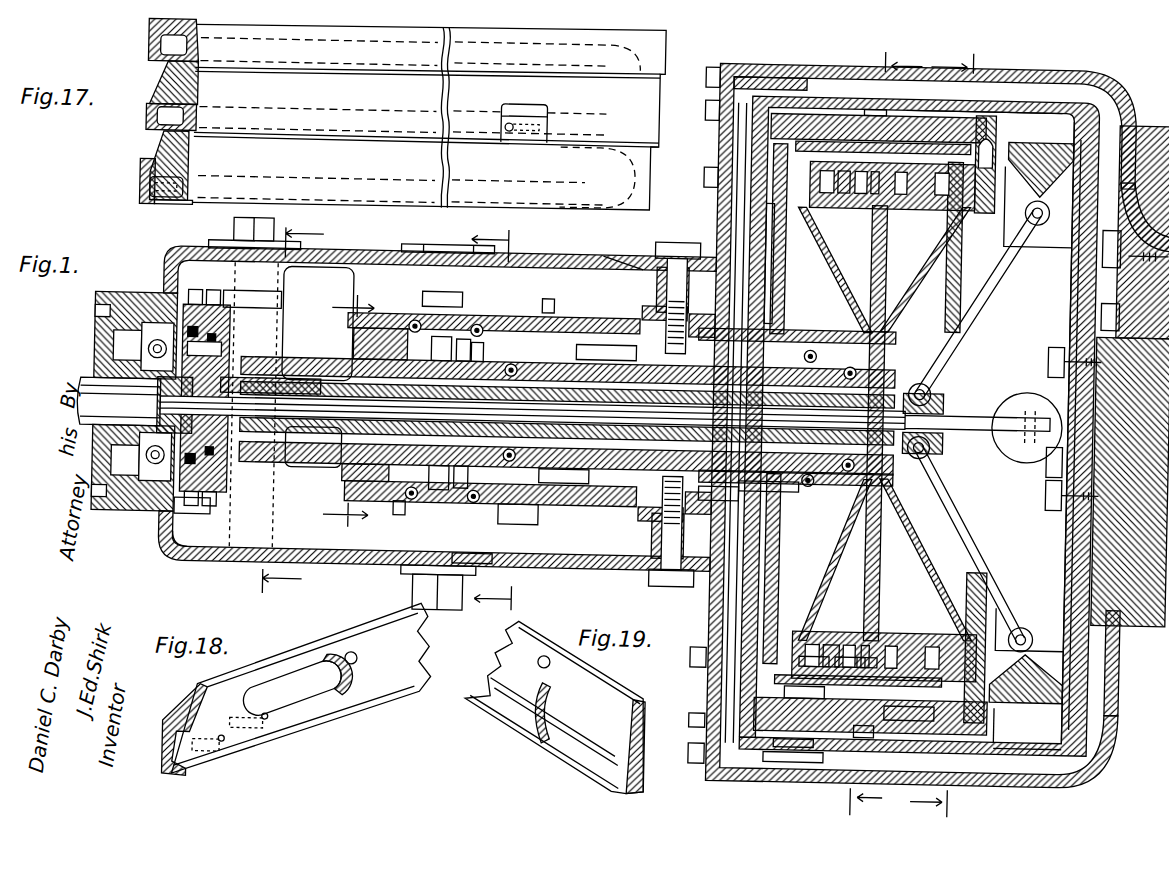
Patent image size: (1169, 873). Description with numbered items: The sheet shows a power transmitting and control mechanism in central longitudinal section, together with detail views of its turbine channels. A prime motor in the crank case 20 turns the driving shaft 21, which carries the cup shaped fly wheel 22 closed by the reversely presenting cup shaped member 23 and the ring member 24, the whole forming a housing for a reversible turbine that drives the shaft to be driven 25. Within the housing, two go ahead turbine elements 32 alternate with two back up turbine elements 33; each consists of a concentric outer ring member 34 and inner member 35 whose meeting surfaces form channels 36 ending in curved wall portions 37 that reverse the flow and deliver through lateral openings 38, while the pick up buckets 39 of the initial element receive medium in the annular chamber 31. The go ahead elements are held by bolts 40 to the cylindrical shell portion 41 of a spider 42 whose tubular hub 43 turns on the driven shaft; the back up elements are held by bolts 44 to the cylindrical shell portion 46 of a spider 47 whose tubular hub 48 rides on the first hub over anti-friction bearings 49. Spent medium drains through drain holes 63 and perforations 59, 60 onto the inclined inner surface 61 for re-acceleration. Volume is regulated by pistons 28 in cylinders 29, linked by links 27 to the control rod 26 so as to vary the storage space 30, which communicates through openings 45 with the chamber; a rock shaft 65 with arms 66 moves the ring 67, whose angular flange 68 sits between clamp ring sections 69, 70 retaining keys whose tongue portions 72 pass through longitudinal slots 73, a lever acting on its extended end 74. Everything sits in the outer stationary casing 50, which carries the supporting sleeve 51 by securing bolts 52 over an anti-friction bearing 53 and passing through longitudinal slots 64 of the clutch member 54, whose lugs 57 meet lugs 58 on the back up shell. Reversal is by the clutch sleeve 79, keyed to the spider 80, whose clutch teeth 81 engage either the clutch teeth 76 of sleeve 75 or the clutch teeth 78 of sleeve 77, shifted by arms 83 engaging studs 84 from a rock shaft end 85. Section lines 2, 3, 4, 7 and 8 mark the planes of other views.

In FIG. 1, the crank case 20 is at (1144, 209).
In FIG. 1, the driving shaft 21 is at (1106, 375).
In FIG. 1, the fly wheel 22 is at (1076, 122).
In FIG. 1, the cup shaped member 23 is at (908, 104).
In FIG. 1, the ring member 24 is at (1012, 78).
In FIG. 1, the shaft to be driven 25 is at (92, 389).
In FIG. 1, the control rod 26 is at (718, 492).
In FIG. 1, the links 27 is at (990, 292).
In FIG. 1, the pistons 28 is at (1070, 150).
In FIG. 1, the cylinders 29 is at (1030, 384).
In FIG. 1, the storage space 30 is at (1048, 734).
In FIG. 1, the annular chamber 31 is at (1007, 725).
In FIG. 17, the go ahead turbine elements 32 is at (143, 36).
In FIG. 1, the go ahead turbine elements 32 is at (864, 203).
In FIG. 17, the back up turbine elements 33 is at (165, 90).
In FIG. 1, the back up turbine elements 33 is at (840, 203).
In FIG. 17, the outer ring member 34 is at (140, 182).
In FIG. 1, the outer ring member 34 is at (852, 642).
In FIG. 18, the outer ring member 34 is at (362, 650).
In FIG. 19, the outer ring member 34 is at (626, 692).
In FIG. 17, the inner member 35 is at (180, 160).
In FIG. 1, the inner member 35 is at (820, 640).
In FIG. 17, the channels 36 is at (158, 52).
In FIG. 1, the channels 36 is at (876, 650).
In FIG. 18, the channels 36 is at (286, 710).
In FIG. 19, the channels 36 is at (496, 688).
In FIG. 17, the curved wall portions 37 is at (337, 85).
In FIG. 18, the curved wall portions 37 is at (345, 655).
In FIG. 19, the curved wall portions 37 is at (540, 728).
In FIG. 17, the lateral openings 38 is at (168, 214).
In FIG. 1, the lateral openings 38 is at (924, 230).
In FIG. 1, the pick up buckets 39 is at (1000, 134).
In FIG. 1, the bolts 40 is at (920, 210).
In FIG. 1, the cylindrical shell portion 41 is at (838, 203).
In FIG. 1, the spider 42 is at (898, 290).
In FIG. 1, the tubular hub 43 is at (797, 410).
In FIG. 1, the bolts 44 is at (832, 112).
In FIG. 1, the openings 45 is at (1008, 74).
In FIG. 1, the cylindrical shell portion 46 is at (812, 794).
In FIG. 1, the spider 47 is at (831, 293).
In FIG. 1, the tubular hub 48 is at (797, 346).
In FIG. 1, the anti-friction bearings 49 is at (906, 476).
In FIG. 1, the outer stationary casing 50 is at (612, 262).
In FIG. 1, the supporting sleeve 51 is at (687, 420).
In FIG. 1, the securing bolts 52 is at (674, 256).
In FIG. 1, the anti-friction bearing 53 is at (585, 316).
In FIG. 1, the clutch member 54 is at (914, 716).
In FIG. 1, the lugs 57 is at (732, 684).
In FIG. 1, the lugs 58 is at (808, 100).
In FIG. 1, the perforations 59 is at (812, 744).
In FIG. 1, the perforations 60 is at (790, 760).
In FIG. 1, the inner surface 61 is at (874, 734).
In FIG. 17, the drain holes 63 is at (186, 191).
In FIG. 18, the drain holes 63 is at (272, 728).
In FIG. 1, the longitudinal slots 64 is at (645, 312).
In FIG. 1, the rock shaft 65 is at (198, 566).
In FIG. 1, the arms 66 is at (262, 293).
In FIG. 1, the ring 67 is at (230, 322).
In FIG. 1, the angular flange 68 is at (230, 344).
In FIG. 1, the clamp ring section 69 is at (230, 364).
In FIG. 1, the clamp ring section 70 is at (163, 266).
In FIG. 1, the tongue portion 72 is at (270, 420).
In FIG. 1, the longitudinal slots 73 is at (308, 345).
In FIG. 1, the extended end 74 is at (230, 232).
In FIG. 1, the sleeve 75 is at (563, 485).
In FIG. 1, the clutch teeth 76 is at (520, 526).
In FIG. 1, the sleeve 77 is at (452, 362).
In FIG. 1, the clutch teeth 78 is at (436, 413).
In FIG. 1, the clutch sleeve 79 is at (470, 342).
In FIG. 1, the spider 80 is at (348, 333).
In FIG. 1, the clutch teeth 81 is at (400, 512).
In FIG. 1, the arms 83 is at (420, 302).
In FIG. 1, the studs 84 is at (466, 246).
In FIG. 1, the end of rock shaft 85 is at (450, 612).
In FIG. 1, the section line 2 is at (886, 434).
In FIG. 1, the section line 3 is at (942, 434).
In FIG. 1, the section line 4 is at (493, 411).
In FIG. 1, the section line 7 is at (291, 401).
In FIG. 1, the section line 8 is at (346, 408).